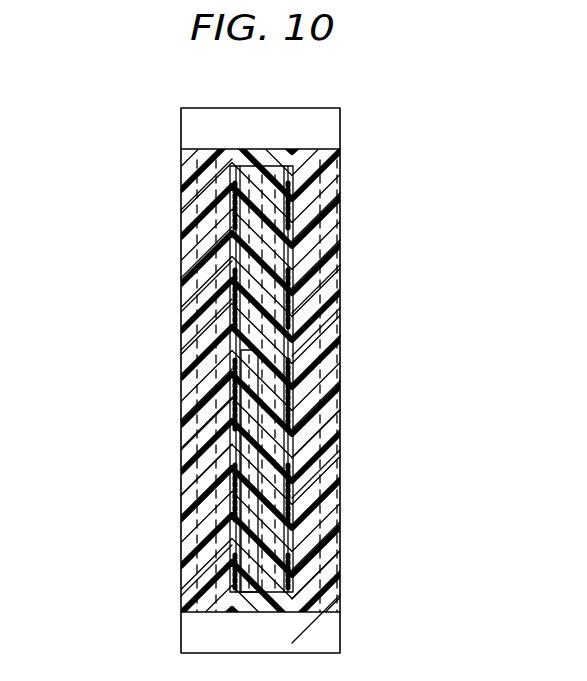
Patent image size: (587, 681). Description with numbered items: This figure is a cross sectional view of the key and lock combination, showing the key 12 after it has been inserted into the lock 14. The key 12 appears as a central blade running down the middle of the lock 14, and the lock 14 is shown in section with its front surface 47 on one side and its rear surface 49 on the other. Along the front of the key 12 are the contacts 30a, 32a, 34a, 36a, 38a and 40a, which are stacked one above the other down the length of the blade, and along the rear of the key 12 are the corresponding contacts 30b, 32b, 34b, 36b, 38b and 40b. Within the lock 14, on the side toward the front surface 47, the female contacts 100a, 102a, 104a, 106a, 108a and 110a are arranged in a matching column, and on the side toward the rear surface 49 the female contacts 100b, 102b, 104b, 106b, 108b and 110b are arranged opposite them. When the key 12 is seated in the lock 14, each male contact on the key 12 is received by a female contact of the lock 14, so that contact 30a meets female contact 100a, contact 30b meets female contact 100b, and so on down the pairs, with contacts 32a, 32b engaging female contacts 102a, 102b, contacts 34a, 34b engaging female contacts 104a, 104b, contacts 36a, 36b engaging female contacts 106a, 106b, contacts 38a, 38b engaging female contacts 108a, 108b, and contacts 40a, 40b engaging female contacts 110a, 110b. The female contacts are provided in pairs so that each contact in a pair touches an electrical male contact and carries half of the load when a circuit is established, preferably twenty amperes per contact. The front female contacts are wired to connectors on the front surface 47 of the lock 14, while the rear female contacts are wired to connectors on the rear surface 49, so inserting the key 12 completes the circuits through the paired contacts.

The key 12 is at (250, 175).
The lock 14 is at (318, 78).
The front surface 47 is at (300, 380).
The rear surface 49 is at (232, 378).
The female contact 100a is at (320, 193).
The female contact 100b is at (200, 212).
The contact 30a is at (318, 240).
The contact 30b is at (205, 238).
The female contact 102a is at (320, 265).
The female contact 102b is at (200, 280).
The contact 32a is at (318, 308).
The contact 32b is at (205, 312).
The female contact 104a is at (320, 336).
The female contact 104b is at (200, 352).
The contact 34a is at (318, 381).
The contact 34b is at (205, 378).
The female contact 106a is at (320, 411).
The female contact 106b is at (200, 422).
The contact 36a is at (318, 450).
The contact 36b is at (205, 450).
The female contact 108a is at (320, 482).
The female contact 108b is at (200, 498).
The contact 38a is at (318, 522).
The contact 38b is at (205, 523).
The female contact 110a is at (320, 551).
The female contact 110b is at (200, 570).
The contact 40a is at (318, 596).
The contact 40b is at (205, 594).